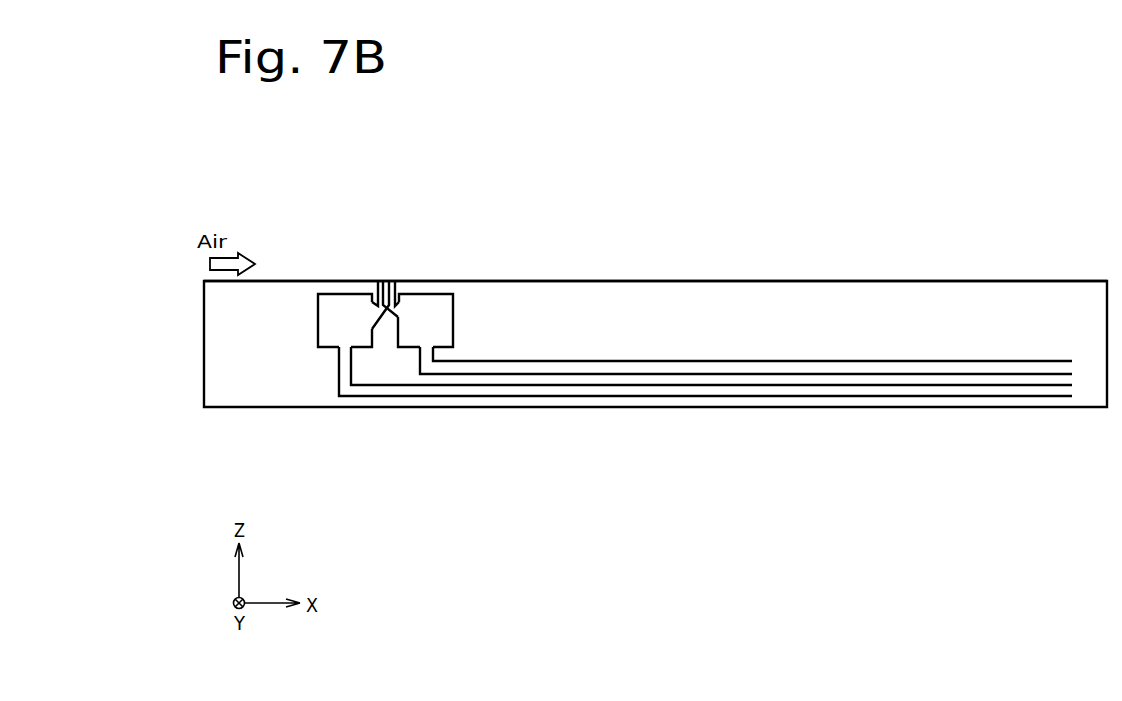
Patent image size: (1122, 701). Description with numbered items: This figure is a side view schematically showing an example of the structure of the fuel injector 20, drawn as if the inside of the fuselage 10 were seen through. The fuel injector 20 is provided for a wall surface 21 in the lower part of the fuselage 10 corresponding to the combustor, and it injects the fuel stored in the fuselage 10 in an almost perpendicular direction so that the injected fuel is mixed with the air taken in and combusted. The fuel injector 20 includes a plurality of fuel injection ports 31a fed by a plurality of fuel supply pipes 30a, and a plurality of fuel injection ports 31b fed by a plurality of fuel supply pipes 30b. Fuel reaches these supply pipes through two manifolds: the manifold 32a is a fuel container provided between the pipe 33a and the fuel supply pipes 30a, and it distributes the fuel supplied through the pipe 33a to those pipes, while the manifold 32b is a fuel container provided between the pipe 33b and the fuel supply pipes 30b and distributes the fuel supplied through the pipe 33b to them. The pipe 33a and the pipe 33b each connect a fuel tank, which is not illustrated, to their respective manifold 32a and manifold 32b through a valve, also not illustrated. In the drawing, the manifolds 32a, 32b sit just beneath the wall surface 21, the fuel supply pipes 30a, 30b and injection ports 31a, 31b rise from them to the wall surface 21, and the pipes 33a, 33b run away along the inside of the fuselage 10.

The fuselage 10 is at (855, 292).
The fuel injector 20 is at (419, 191).
The wall surface 21 is at (918, 281).
The fuel supply pipes 30a is at (396, 282).
The fuel supply pipes 30b is at (378, 283).
The fuel injection ports 31a is at (388, 283).
The fuel injection ports 31b is at (383, 283).
The manifold 32a is at (455, 293).
The manifold 32b is at (317, 296).
The pipe 33a is at (575, 361).
The pipe 33b is at (533, 397).